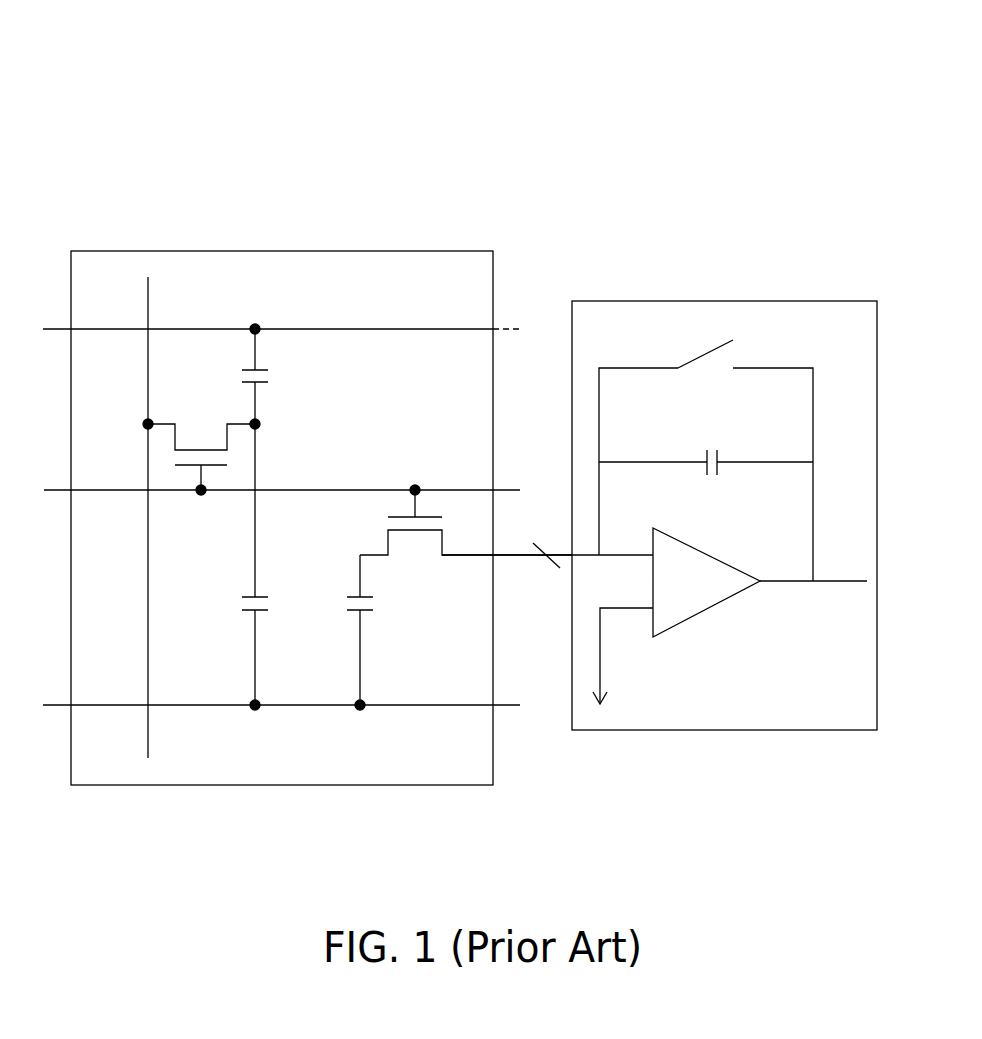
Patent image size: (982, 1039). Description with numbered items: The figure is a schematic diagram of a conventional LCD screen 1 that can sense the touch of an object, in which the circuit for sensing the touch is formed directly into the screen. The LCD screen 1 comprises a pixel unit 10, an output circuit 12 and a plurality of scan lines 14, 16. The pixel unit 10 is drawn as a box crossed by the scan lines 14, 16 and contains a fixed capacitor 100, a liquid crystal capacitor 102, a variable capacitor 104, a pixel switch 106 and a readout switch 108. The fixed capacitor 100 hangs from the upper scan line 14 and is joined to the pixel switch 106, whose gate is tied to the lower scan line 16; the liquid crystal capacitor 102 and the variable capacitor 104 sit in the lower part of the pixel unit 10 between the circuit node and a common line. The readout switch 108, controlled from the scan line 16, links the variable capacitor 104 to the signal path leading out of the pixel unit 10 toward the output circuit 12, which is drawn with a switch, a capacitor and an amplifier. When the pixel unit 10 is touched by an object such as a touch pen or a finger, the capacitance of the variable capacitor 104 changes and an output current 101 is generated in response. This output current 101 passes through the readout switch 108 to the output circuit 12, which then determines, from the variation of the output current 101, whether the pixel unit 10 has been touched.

The LCD screen 1 is at (534, 82).
The pixel unit 10 is at (227, 251).
The output circuit 12 is at (623, 301).
The scan line 14 is at (333, 329).
The scan line 16 is at (335, 490).
The fixed capacitor 100 is at (293, 370).
The output current 101 is at (548, 553).
The liquid crystal capacitor 102 is at (228, 603).
The variable capacitor 104 is at (335, 603).
The pixel switch 106 is at (222, 414).
The readout switch 108 is at (402, 558).